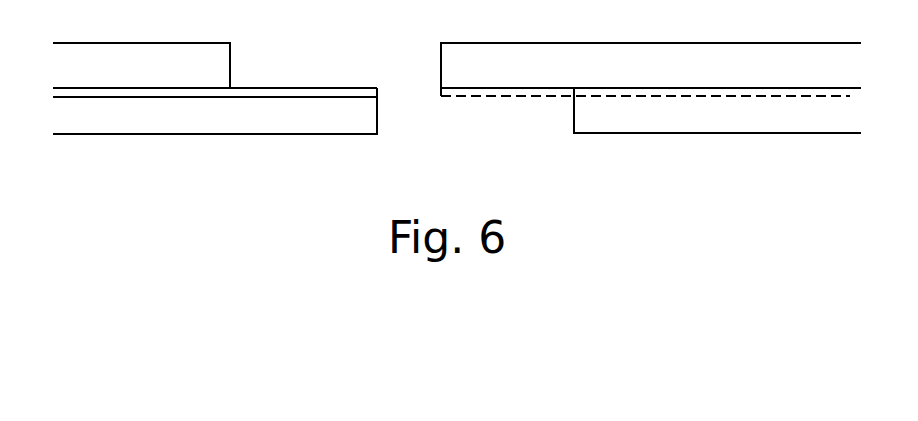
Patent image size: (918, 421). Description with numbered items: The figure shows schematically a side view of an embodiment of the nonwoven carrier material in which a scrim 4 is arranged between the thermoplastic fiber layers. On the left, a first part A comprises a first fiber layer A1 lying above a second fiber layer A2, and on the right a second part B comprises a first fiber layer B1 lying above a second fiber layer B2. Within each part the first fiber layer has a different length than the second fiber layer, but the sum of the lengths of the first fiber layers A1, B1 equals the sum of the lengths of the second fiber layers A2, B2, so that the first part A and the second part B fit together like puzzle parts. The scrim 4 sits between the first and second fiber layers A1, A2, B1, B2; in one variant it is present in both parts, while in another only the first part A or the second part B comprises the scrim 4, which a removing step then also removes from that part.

The scrim 4 is at (301, 87).
The first part A is at (215, 67).
The first fiber layer A1 is at (215, 65).
The second fiber layer A2 is at (215, 116).
The second part B is at (651, 67).
The first fiber layer B1 is at (651, 69).
The second fiber layer B2 is at (717, 111).